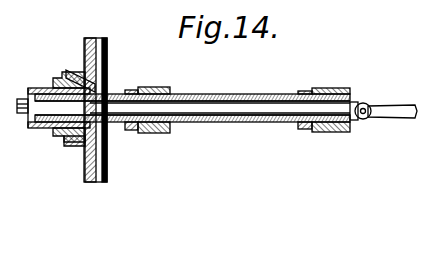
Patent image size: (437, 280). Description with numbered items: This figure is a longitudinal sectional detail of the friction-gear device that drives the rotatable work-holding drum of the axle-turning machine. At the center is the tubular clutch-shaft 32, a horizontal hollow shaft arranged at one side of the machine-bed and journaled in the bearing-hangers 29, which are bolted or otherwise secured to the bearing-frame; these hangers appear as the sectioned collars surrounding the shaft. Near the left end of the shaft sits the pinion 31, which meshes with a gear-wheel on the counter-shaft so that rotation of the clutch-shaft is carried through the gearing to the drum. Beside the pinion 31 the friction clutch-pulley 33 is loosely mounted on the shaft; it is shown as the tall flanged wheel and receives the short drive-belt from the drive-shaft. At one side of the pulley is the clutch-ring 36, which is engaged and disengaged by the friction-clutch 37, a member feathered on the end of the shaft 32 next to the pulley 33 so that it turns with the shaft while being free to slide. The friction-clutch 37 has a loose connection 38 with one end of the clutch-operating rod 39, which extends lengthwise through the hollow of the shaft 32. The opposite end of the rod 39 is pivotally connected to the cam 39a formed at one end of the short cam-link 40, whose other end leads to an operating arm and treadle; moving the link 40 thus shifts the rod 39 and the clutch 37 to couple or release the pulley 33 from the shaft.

The bearing-hangers 29 is at (165, 134).
The pinion 31 is at (127, 131).
The tubular clutch-shaft 32 is at (222, 120).
The friction clutch-pulley 33 is at (86, 38).
The clutch-ring 36 is at (76, 147).
The friction-clutch 37 is at (60, 138).
The loose connection 38 is at (28, 100).
The clutch-operating rod 39 is at (280, 112).
The cam 39a is at (355, 125).
The cam-link 40 is at (398, 117).